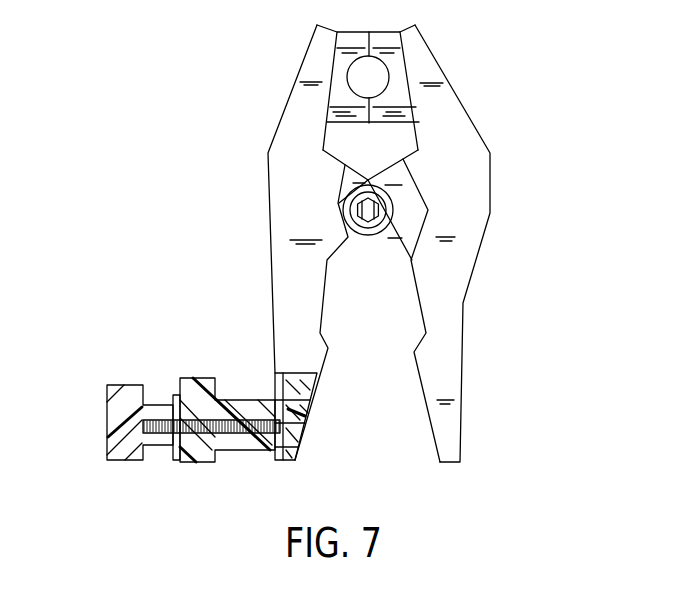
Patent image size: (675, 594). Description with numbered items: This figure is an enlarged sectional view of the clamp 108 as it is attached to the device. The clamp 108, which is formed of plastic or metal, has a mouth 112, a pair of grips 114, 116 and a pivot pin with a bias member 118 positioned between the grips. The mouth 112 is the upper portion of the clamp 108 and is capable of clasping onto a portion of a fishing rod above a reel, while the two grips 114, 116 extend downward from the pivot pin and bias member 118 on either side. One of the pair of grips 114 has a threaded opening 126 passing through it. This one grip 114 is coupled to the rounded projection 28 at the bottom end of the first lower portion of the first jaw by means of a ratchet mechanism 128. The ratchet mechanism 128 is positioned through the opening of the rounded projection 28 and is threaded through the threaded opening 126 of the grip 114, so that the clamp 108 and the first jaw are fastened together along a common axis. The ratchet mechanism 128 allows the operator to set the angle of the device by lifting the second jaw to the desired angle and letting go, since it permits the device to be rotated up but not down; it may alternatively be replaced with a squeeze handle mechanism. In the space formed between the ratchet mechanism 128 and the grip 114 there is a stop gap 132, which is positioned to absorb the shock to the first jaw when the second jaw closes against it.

The clamp 108 is at (490, 213).
The mouth 112 is at (300, 67).
The grip 114 is at (273, 333).
The grip 116 is at (463, 338).
The pivot pin with bias member 118 is at (356, 214).
The threaded opening 126 is at (300, 457).
The ratchet mechanism 128 is at (127, 392).
The rounded projection 28 is at (180, 460).
The stop gap 132 is at (230, 452).